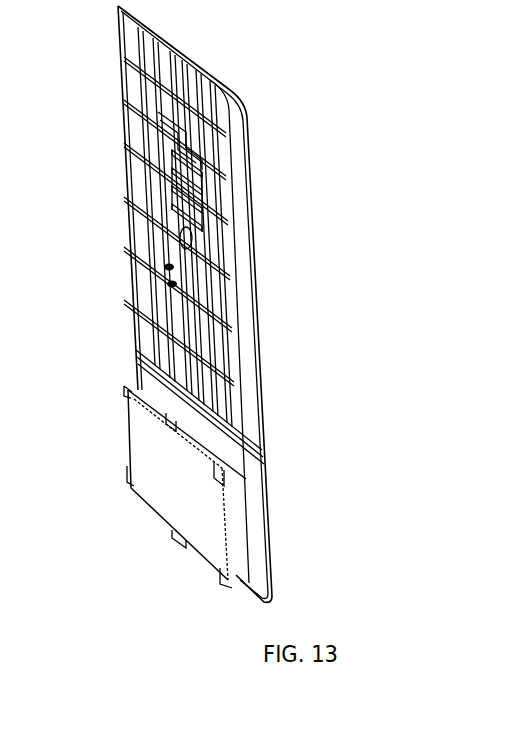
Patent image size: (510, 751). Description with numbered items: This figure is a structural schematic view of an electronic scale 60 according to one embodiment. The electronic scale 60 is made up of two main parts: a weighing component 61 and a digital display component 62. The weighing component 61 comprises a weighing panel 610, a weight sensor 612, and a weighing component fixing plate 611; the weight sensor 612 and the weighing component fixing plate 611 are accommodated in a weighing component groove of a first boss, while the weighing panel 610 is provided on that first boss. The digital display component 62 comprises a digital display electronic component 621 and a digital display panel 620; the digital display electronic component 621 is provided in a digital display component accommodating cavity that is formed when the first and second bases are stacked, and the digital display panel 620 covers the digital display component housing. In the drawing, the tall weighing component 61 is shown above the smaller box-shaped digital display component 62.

The electronic scale 60 is at (406, 46).
The weighing component 61 is at (403, 325).
The weighing panel 610 is at (246, 304).
The weighing component fixing plate 611 is at (267, 186).
The weight sensor 612 is at (250, 221).
The digital display component 62 is at (407, 570).
The digital display panel 620 is at (250, 483).
The digital display electronic component 621 is at (294, 530).